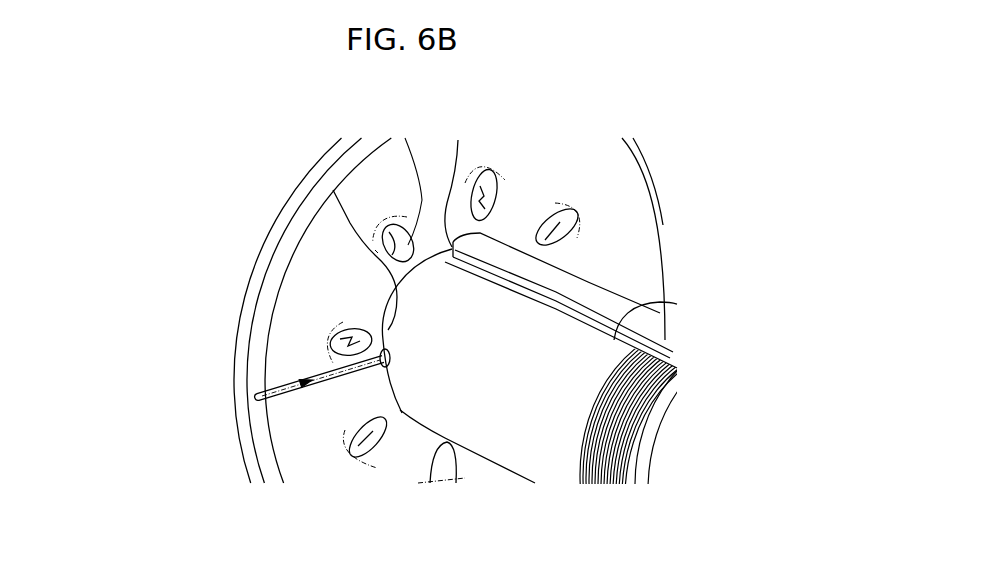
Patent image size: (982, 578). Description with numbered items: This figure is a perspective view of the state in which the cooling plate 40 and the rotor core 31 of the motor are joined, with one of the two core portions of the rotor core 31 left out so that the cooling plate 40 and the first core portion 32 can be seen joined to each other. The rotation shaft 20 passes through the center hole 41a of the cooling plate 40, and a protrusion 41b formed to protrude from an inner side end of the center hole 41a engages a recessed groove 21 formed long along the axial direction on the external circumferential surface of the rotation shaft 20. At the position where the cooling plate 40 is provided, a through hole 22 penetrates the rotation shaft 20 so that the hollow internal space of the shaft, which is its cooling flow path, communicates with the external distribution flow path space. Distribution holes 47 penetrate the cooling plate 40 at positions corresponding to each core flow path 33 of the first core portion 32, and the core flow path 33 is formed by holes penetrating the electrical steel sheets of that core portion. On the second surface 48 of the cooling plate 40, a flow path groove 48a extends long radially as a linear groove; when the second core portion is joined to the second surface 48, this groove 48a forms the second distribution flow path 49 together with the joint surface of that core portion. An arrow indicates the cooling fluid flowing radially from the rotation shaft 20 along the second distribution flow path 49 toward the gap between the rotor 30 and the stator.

The rotation shaft 20 is at (635, 405).
The recessed groove 21 is at (623, 320).
The through hole 22 is at (380, 368).
The rotor 30 is at (224, 330).
The rotor core 31 is at (230, 267).
The first core portion 32 is at (288, 310).
The core flow path 33 is at (385, 220).
The cooling plate 40 is at (469, 319).
The center hole 41a is at (333, 190).
The protrusion 41b is at (458, 140).
The distribution hole 47 is at (405, 138).
The second surface 48 is at (276, 427).
The flow path groove 48a is at (322, 374).
The second distribution flow path 49 is at (276, 390).